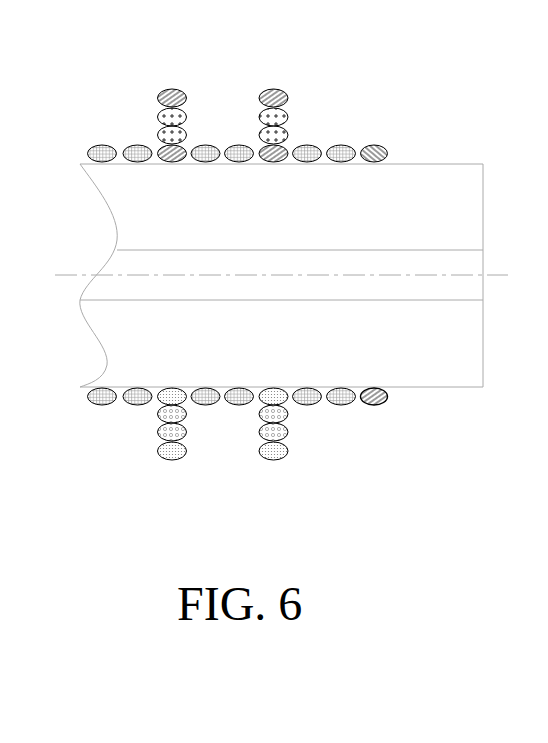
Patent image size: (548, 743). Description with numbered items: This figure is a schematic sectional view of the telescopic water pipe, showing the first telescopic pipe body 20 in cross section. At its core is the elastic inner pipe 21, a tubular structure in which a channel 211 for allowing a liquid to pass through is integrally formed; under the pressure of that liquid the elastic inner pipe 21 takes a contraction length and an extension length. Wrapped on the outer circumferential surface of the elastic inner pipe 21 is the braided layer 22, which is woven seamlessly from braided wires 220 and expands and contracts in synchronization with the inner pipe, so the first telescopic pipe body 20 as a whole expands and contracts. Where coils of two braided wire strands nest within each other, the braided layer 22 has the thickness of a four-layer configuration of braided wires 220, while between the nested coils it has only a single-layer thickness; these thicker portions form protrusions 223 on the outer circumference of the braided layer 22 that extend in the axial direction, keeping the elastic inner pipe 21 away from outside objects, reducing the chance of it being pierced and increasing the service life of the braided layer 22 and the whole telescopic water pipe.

The first telescopic pipe body 20 is at (408, 110).
The elastic inner pipe 21 is at (146, 210).
The channel 211 is at (129, 264).
The braided layer 22 is at (170, 95).
The protrusions 223 is at (167, 98).
The braided wires 220 is at (103, 150).